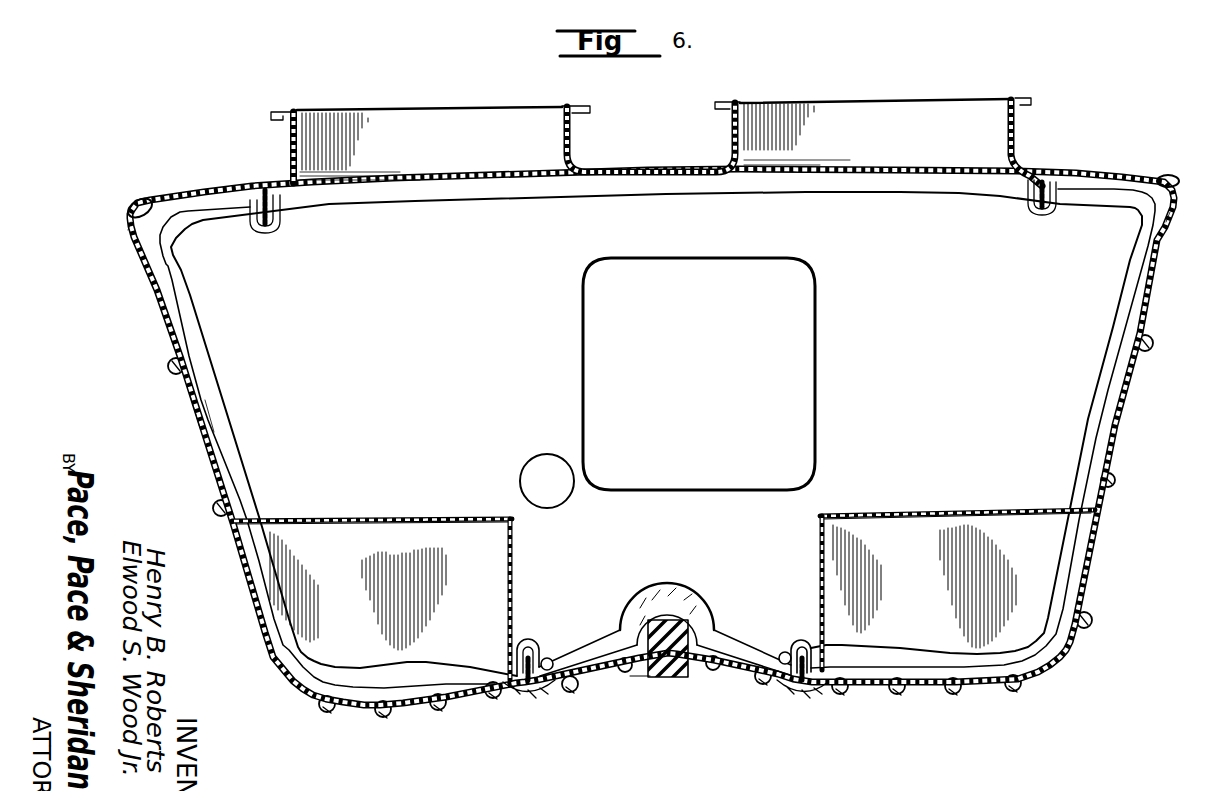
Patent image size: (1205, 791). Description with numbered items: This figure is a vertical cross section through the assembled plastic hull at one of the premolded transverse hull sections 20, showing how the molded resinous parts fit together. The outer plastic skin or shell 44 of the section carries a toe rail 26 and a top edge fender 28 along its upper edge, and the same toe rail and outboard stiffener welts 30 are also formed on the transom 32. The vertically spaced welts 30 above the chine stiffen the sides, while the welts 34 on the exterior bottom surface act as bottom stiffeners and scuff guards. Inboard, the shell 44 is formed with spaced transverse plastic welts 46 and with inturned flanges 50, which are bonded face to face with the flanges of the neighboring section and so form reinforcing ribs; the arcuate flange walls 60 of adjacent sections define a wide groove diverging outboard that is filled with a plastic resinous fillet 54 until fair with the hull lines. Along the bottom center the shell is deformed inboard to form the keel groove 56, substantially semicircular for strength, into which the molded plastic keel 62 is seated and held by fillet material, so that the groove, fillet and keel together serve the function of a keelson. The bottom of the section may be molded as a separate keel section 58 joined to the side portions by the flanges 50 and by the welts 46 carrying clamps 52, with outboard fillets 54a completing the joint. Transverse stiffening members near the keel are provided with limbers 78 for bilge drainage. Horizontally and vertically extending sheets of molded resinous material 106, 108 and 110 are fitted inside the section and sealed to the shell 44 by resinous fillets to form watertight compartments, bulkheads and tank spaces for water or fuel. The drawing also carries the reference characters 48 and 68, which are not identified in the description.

The transverse hull section 20 is at (1120, 423).
The toe rail 26 is at (1166, 178).
The top edge fender 28 is at (127, 214).
The outboard stiffener welt 30 is at (176, 374).
The transom 32 is at (138, 200).
The bottom welt 34 is at (386, 717).
The plastic skin or shell 44 is at (207, 450).
The transverse plastic welt 46 is at (196, 415).
The inner shell 48 is at (752, 620).
The flange 50 is at (540, 652).
The clamp 52 is at (534, 641).
The plastic resinous fillet 54 is at (240, 520).
The outboard fillet 54a is at (803, 688).
The keel groove 56 is at (684, 622).
The keel section 58 is at (652, 622).
The arcuate flange wall 60 is at (678, 596).
The molded plastic keel 62 is at (692, 679).
The top flange 68 is at (288, 134).
The limber 78 is at (552, 660).
The sheet of molded resinous material 106 is at (478, 556).
The sheet of molded resinous material 108 is at (415, 517).
The sheet of molded resinous material 110 is at (513, 576).